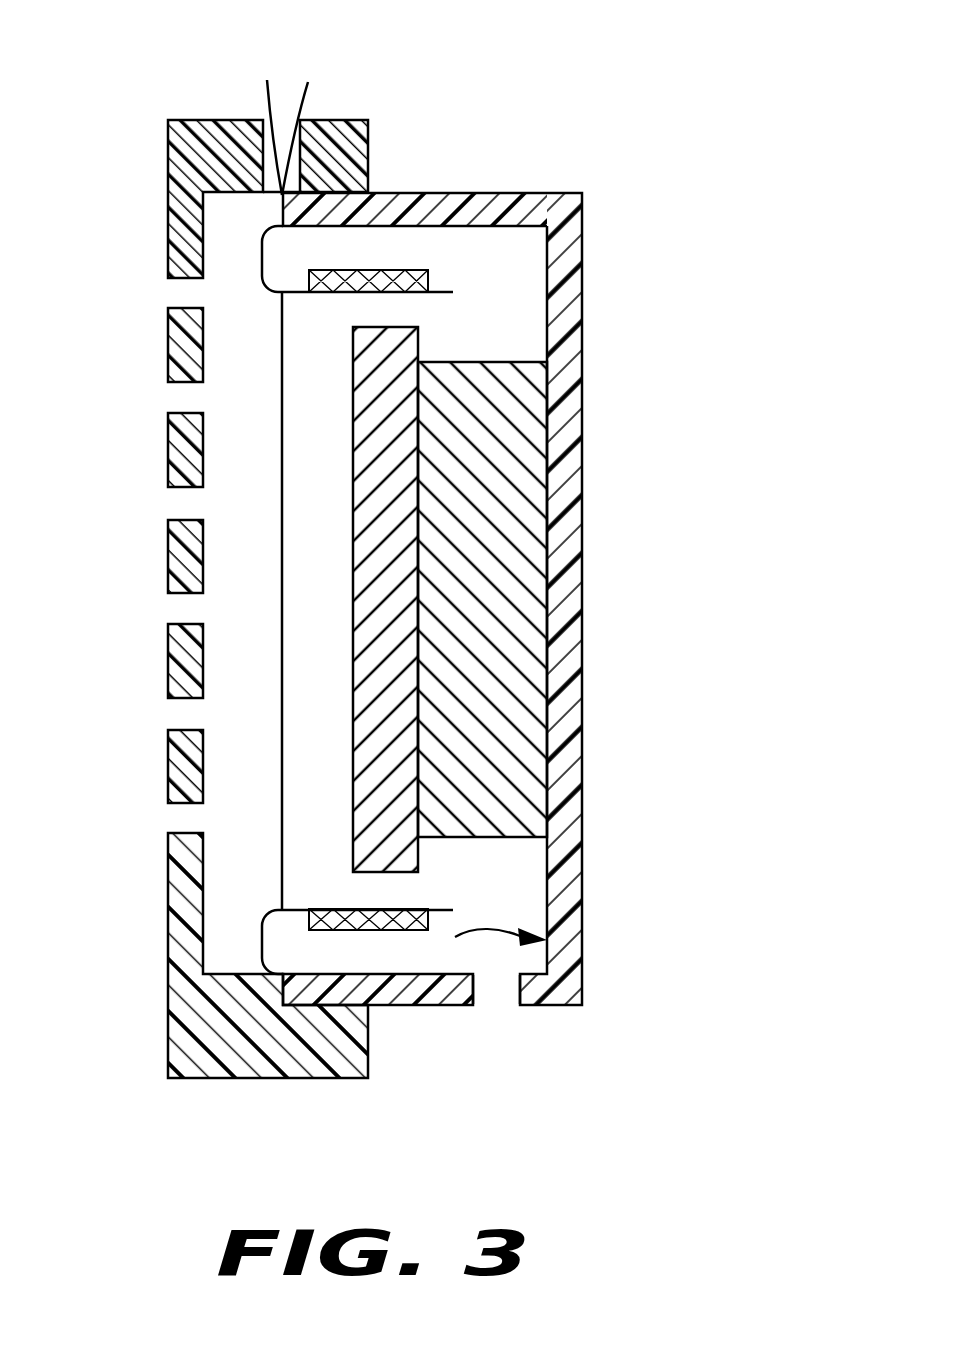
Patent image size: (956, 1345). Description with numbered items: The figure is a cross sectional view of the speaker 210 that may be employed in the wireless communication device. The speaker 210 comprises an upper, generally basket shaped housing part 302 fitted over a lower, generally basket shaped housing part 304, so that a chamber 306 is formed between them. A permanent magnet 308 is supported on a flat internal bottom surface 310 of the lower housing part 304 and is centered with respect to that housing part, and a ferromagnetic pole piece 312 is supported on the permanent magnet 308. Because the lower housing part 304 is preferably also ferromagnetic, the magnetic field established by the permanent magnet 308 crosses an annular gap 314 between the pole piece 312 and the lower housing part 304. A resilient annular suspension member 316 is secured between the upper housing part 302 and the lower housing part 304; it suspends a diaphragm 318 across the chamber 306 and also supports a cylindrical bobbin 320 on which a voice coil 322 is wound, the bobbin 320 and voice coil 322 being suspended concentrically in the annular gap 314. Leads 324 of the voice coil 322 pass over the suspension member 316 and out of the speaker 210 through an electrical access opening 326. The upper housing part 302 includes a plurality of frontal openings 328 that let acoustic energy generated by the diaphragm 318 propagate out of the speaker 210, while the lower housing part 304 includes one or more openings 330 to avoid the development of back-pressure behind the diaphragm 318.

The speaker 210 is at (564, 81).
The upper housing part 302 is at (168, 1040).
The lower housing part 304 is at (583, 963).
The chamber 306 is at (497, 298).
The permanent magnet 308 is at (533, 607).
The flat internal bottom surface 310 is at (455, 937).
The ferromagnetic pole piece 312 is at (353, 403).
The annular gap 314 is at (318, 953).
The resilient annular suspension member 316 is at (264, 940).
The diaphragm 318 is at (282, 714).
The cylindrical bobbin 320 is at (437, 908).
The voice coil 322 is at (403, 272).
The leads 324 is at (268, 96).
The electrical access opening 326 is at (292, 163).
The frontal openings 328 is at (183, 500).
The openings 330 is at (503, 1000).